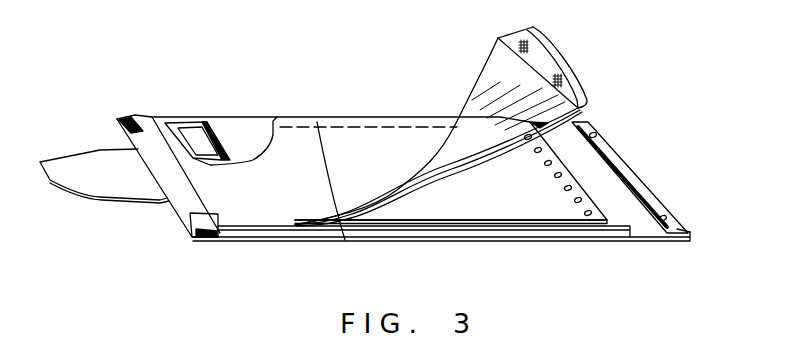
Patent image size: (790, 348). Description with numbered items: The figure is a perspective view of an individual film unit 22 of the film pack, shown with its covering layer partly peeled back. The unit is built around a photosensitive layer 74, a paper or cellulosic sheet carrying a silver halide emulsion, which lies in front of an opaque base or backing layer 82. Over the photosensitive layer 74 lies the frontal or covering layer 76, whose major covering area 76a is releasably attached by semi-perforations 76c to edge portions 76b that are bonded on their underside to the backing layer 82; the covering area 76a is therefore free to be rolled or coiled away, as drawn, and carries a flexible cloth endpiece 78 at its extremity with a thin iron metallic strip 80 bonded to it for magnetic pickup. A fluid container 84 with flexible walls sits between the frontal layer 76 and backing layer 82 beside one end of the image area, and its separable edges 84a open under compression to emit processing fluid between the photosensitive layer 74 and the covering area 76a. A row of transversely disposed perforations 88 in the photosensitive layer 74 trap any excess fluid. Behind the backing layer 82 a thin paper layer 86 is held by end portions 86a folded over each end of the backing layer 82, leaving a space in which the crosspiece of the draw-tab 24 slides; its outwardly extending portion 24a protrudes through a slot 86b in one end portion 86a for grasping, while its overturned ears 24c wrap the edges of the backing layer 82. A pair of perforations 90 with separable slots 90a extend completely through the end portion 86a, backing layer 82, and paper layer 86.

The film unit 22 is at (310, 247).
The draw-tab 24 is at (98, 204).
The outwardly extending portion 24a is at (112, 180).
The overturned ears 24c is at (210, 228).
The photosensitive layer 74 is at (500, 198).
The frontal or covering layer 76 is at (282, 215).
The major covering area 76a is at (498, 80).
The edge portions 76b is at (373, 228).
The semi-perforations 76c is at (352, 126).
The flexible endpiece 78 is at (542, 61).
The metallic strip 80 is at (570, 72).
The opaque base or backing layer 82 is at (613, 207).
The fluid container 84 is at (197, 140).
The separable edges 84a is at (223, 143).
The thin layer 86 is at (513, 244).
The end portions 86a is at (143, 140).
The slot 86b is at (157, 187).
The perforations 88 is at (547, 166).
The perforations 90 is at (594, 136).
The separable slots 90a is at (673, 227).